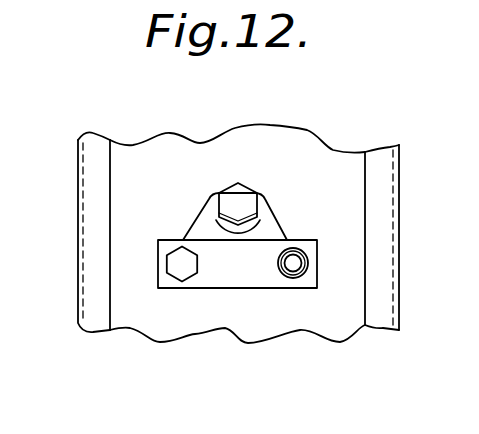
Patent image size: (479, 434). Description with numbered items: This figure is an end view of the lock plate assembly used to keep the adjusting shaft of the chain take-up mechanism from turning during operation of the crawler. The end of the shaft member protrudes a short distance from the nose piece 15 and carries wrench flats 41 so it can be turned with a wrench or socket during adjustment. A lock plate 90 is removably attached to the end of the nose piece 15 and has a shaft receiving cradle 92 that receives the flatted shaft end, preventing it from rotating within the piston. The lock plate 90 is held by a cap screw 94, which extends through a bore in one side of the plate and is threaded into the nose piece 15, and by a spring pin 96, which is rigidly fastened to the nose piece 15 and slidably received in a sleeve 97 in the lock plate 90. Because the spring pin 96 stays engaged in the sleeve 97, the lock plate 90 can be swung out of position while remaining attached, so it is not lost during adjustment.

The nose piece 15 is at (307, 158).
The wrench flats 41 is at (238, 200).
The lock plate 90 is at (242, 273).
The shaft receiving cradle 92 is at (228, 230).
The cap screw 94 is at (183, 270).
The spring pin 96 is at (308, 275).
The sleeve 97 is at (308, 256).